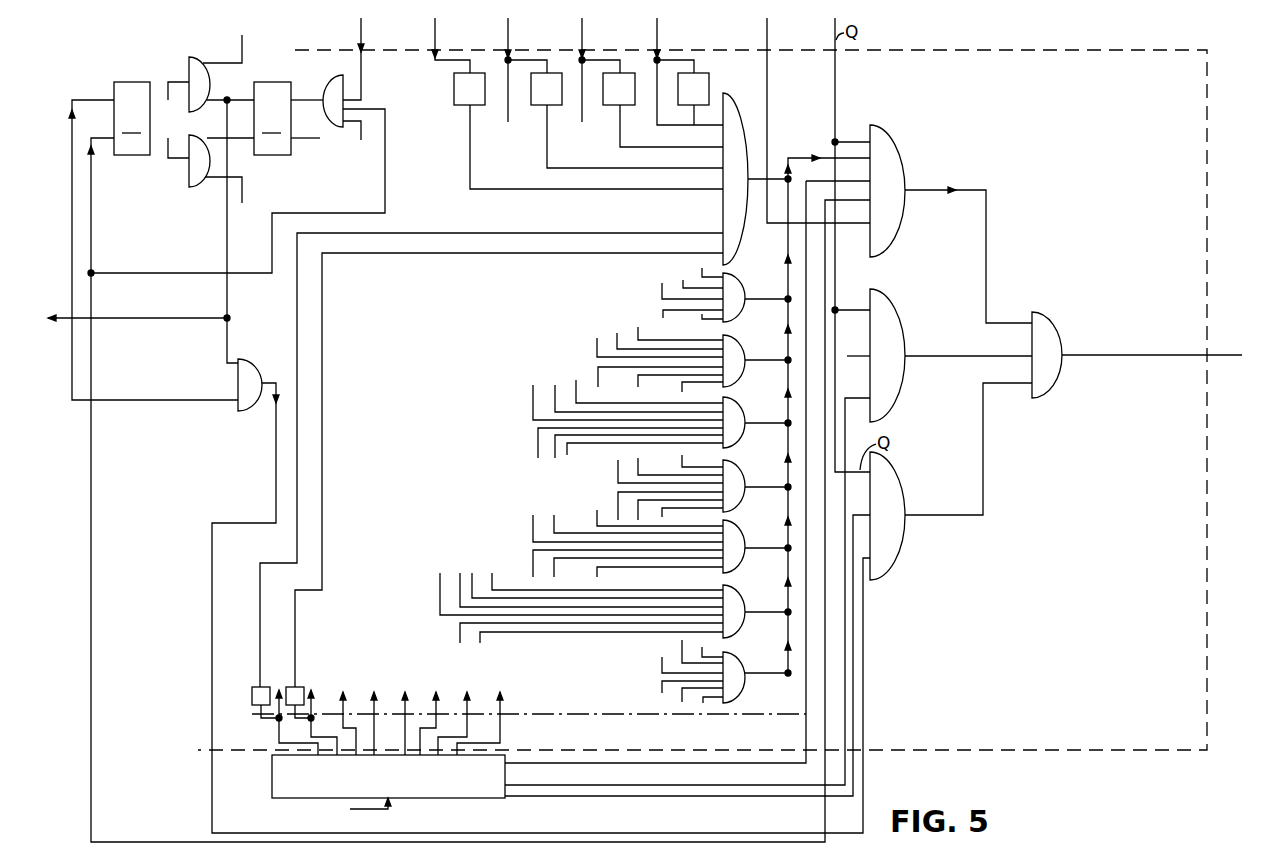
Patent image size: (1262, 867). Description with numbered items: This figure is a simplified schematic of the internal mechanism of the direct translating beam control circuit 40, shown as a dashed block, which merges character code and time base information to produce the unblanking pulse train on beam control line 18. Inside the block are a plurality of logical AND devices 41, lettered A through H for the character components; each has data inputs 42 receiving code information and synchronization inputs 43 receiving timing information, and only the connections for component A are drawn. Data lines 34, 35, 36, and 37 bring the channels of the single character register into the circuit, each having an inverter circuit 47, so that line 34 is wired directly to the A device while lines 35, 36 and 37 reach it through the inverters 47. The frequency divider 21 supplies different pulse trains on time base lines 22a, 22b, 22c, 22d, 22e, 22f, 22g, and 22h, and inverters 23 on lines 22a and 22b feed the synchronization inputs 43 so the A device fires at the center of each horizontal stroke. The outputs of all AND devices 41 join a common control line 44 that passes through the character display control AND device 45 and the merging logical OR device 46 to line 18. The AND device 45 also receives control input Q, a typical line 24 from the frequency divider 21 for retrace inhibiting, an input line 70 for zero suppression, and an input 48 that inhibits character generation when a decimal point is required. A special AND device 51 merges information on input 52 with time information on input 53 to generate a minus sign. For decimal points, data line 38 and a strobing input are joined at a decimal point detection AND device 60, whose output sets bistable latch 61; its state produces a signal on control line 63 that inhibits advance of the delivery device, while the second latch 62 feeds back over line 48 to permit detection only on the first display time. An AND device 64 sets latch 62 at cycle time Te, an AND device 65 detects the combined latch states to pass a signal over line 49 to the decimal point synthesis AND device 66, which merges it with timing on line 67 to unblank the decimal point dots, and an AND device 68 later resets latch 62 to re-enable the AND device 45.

The beam control line 18 is at (1218, 358).
The frequency divider 21 is at (388, 782).
The time base line 22a is at (278, 737).
The time base line 22b is at (311, 737).
The time base line 22c is at (340, 705).
The time base line 22d is at (371, 705).
The time base line 22e is at (402, 705).
The time base line 22f is at (433, 705).
The time base line 22g is at (464, 705).
The time base line 22h is at (497, 705).
The inverters 23 is at (258, 686).
The input line 24 is at (807, 217).
The data line 34 is at (658, 48).
The data line 35 is at (583, 48).
The data line 36 is at (510, 48).
The data line 37 is at (438, 48).
The data line 38 is at (358, 44).
The direct translating beam control circuit 40 is at (1208, 216).
The logical AND devices 41 is at (735, 100).
The data inputs 42 is at (698, 127).
The synchronization inputs 43 is at (634, 232).
The common control line 44 is at (787, 248).
The character display control AND device 45 is at (900, 144).
The merging logical OR device 46 is at (1064, 334).
The inverter circuit 47 is at (706, 74).
The input line 48 is at (91, 196).
The data control line 49 is at (276, 448).
The special AND device 51 is at (901, 300).
The input 52 is at (854, 357).
The input 53 is at (846, 406).
The decimal point detection AND device 60 is at (331, 84).
The bistable latch 61 is at (291, 118).
The bistable latch 62 is at (150, 113).
The control line 63 is at (228, 236).
The AND device 64 is at (196, 60).
The AND device 65 is at (246, 356).
The decimal point synthesis AND device 66 is at (901, 490).
The line 67 is at (853, 516).
The AND device 68 is at (195, 176).
The input line 70 is at (768, 40).